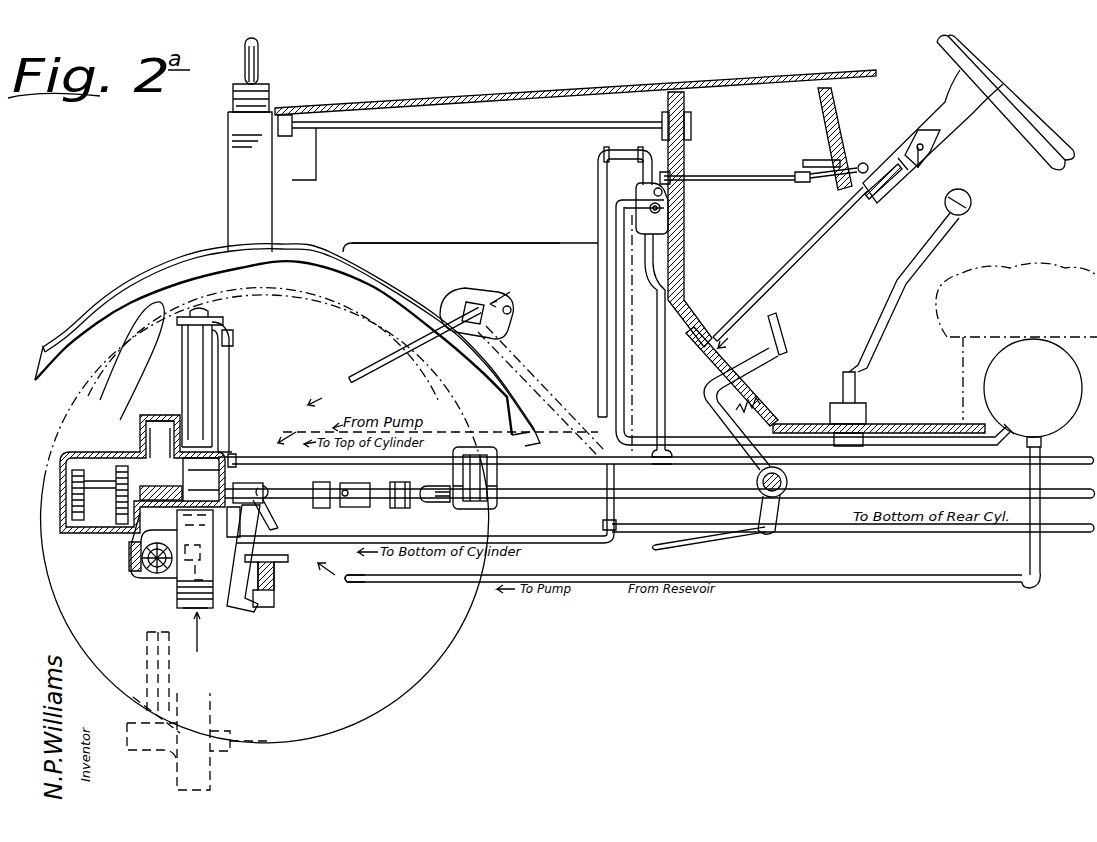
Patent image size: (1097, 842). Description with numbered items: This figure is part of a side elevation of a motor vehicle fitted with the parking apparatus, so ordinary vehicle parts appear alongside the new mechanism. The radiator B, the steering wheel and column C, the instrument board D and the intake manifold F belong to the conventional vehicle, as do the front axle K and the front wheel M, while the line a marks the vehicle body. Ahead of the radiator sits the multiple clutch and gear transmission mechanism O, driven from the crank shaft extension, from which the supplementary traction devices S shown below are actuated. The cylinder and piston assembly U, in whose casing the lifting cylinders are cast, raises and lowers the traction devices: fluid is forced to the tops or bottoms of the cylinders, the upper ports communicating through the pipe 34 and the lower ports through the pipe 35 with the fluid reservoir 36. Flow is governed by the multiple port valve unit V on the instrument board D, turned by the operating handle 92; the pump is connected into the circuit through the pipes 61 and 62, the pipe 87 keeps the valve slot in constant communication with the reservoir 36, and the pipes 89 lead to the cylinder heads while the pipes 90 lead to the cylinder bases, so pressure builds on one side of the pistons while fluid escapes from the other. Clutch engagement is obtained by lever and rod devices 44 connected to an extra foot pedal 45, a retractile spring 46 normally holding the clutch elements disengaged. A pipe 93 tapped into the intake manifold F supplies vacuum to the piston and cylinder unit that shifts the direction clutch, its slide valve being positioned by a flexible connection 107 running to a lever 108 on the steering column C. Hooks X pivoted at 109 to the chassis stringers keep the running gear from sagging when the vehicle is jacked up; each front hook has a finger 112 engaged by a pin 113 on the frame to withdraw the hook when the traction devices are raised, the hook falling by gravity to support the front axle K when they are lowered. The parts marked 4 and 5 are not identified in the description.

The radiator B is at (228, 202).
The body a is at (516, 248).
The control valve unit V is at (670, 165).
The pipes 90 is at (932, 543).
The operating handle 92 is at (668, 197).
The pipes 89 is at (654, 240).
The instrument board D is at (683, 266).
The flexible connection 107 is at (800, 268).
The extra foot pedal 45 is at (778, 326).
The pipe 87 is at (652, 378).
The retractile spring 46 is at (750, 406).
The fluid reservoir 36 is at (1040, 352).
The lever 108 is at (930, 156).
The steering wheel and column C is at (1052, 165).
The pipe 34 is at (227, 408).
The pipe 93 is at (372, 362).
The pipe 61 is at (597, 407).
The cylinder and piston assemblies U is at (169, 388).
The pivot 109 is at (266, 503).
The multiple clutch and gear transmission mechanism O is at (115, 543).
The finger 112 is at (198, 560).
The gear 5 is at (203, 565).
The pin 113 is at (200, 577).
The shaft 4 is at (205, 615).
The hooks X is at (212, 610).
The supplementary traction devices S is at (185, 644).
The front axle K is at (280, 576).
The pipe 62 is at (377, 582).
The pipe 35 is at (615, 544).
The lever and rod devices 44 is at (765, 532).
The front wheels M is at (421, 685).
The intake manifold F is at (500, 327).